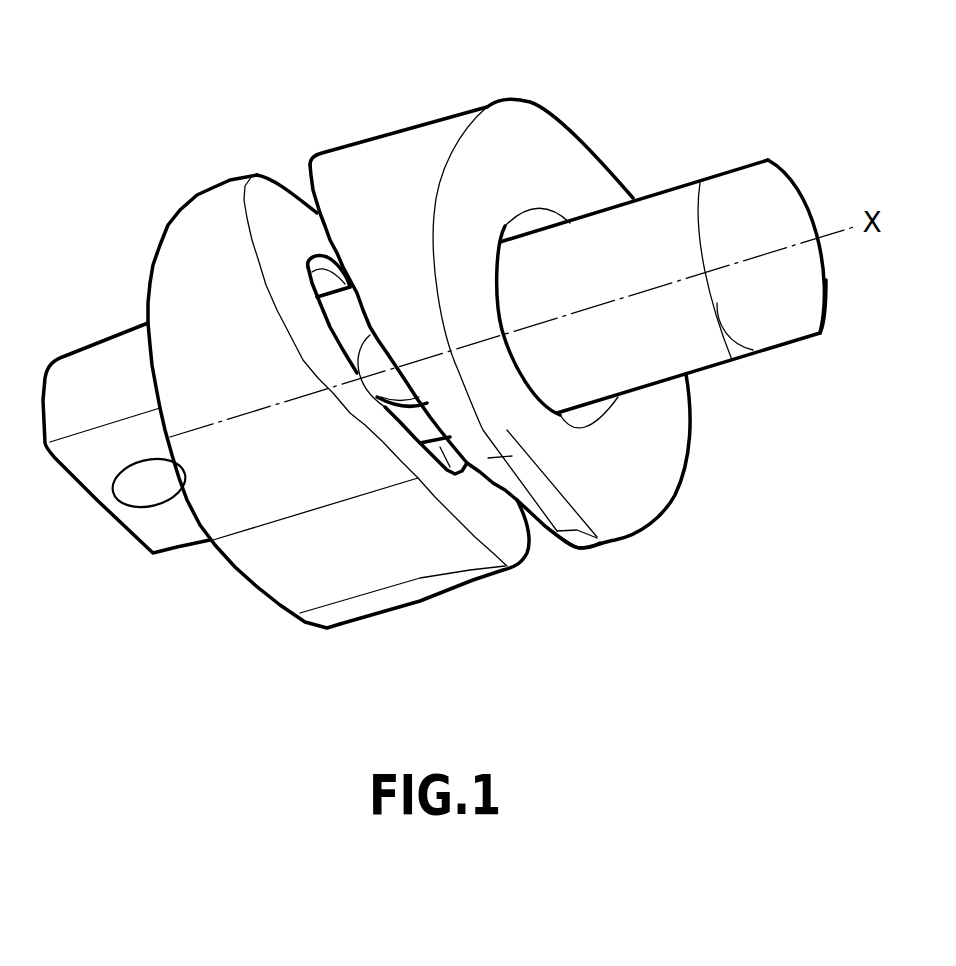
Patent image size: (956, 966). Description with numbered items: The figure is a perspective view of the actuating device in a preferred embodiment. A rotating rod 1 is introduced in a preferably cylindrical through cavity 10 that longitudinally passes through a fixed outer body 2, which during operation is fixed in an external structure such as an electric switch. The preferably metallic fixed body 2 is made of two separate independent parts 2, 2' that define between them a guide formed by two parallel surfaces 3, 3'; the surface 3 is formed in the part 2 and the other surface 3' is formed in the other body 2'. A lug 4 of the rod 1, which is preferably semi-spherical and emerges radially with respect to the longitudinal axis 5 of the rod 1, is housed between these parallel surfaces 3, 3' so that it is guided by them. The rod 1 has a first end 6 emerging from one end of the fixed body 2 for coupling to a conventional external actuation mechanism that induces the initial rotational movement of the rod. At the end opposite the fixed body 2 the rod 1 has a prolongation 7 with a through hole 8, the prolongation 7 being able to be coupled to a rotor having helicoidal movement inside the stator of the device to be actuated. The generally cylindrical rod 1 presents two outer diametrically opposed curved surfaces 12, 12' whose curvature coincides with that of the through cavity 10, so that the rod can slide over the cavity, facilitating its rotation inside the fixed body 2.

The rotating rod 1 is at (660, 217).
The fixed outer body 2 is at (332, 353).
The second part of fixed body 2' is at (500, 283).
The parallel surface 3 is at (414, 586).
The parallel surface 3' is at (572, 597).
The lug 4 is at (403, 390).
The longitudinal axis 5 is at (837, 227).
The first end 6 is at (755, 207).
The prolongation 7 is at (177, 533).
The through hole 8 is at (137, 488).
The through cavity 10 is at (535, 218).
The outer curved surface 12 is at (852, 324).
The outer curved surface 12' is at (757, 384).